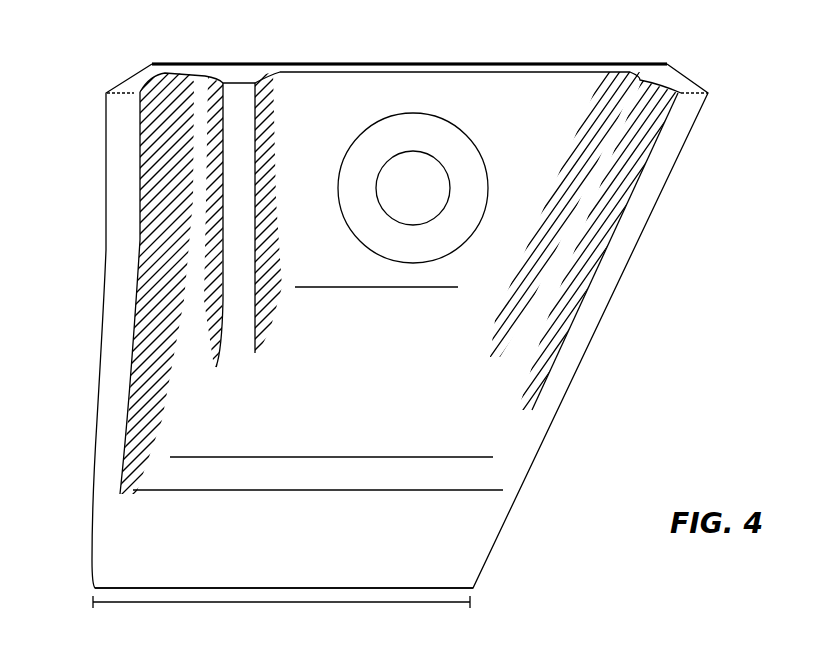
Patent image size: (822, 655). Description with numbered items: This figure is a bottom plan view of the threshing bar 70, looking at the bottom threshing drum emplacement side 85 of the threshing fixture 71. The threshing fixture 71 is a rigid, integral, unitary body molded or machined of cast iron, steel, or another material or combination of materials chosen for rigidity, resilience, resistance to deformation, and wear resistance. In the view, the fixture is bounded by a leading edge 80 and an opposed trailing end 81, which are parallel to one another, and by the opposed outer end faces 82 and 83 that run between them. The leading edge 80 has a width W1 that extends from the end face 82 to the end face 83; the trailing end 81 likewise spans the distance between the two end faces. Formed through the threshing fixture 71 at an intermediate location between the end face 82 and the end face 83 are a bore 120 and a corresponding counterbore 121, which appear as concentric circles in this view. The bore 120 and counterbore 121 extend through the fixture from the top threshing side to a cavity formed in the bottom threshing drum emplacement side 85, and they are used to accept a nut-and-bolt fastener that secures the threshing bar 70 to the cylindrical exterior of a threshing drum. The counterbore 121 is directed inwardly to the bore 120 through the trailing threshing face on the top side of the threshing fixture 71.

The threshing bar 70 is at (620, 406).
The threshing fixture 71 is at (672, 61).
The leading edge 80 is at (170, 590).
The trailing end 81 is at (422, 64).
The end face 82 is at (685, 143).
The end face 83 is at (106, 170).
The bottom threshing drum emplacement side 85 is at (396, 334).
The bore 120 is at (432, 199).
The counterbore 121 is at (430, 252).
The width of leading edge W1 is at (432, 603).